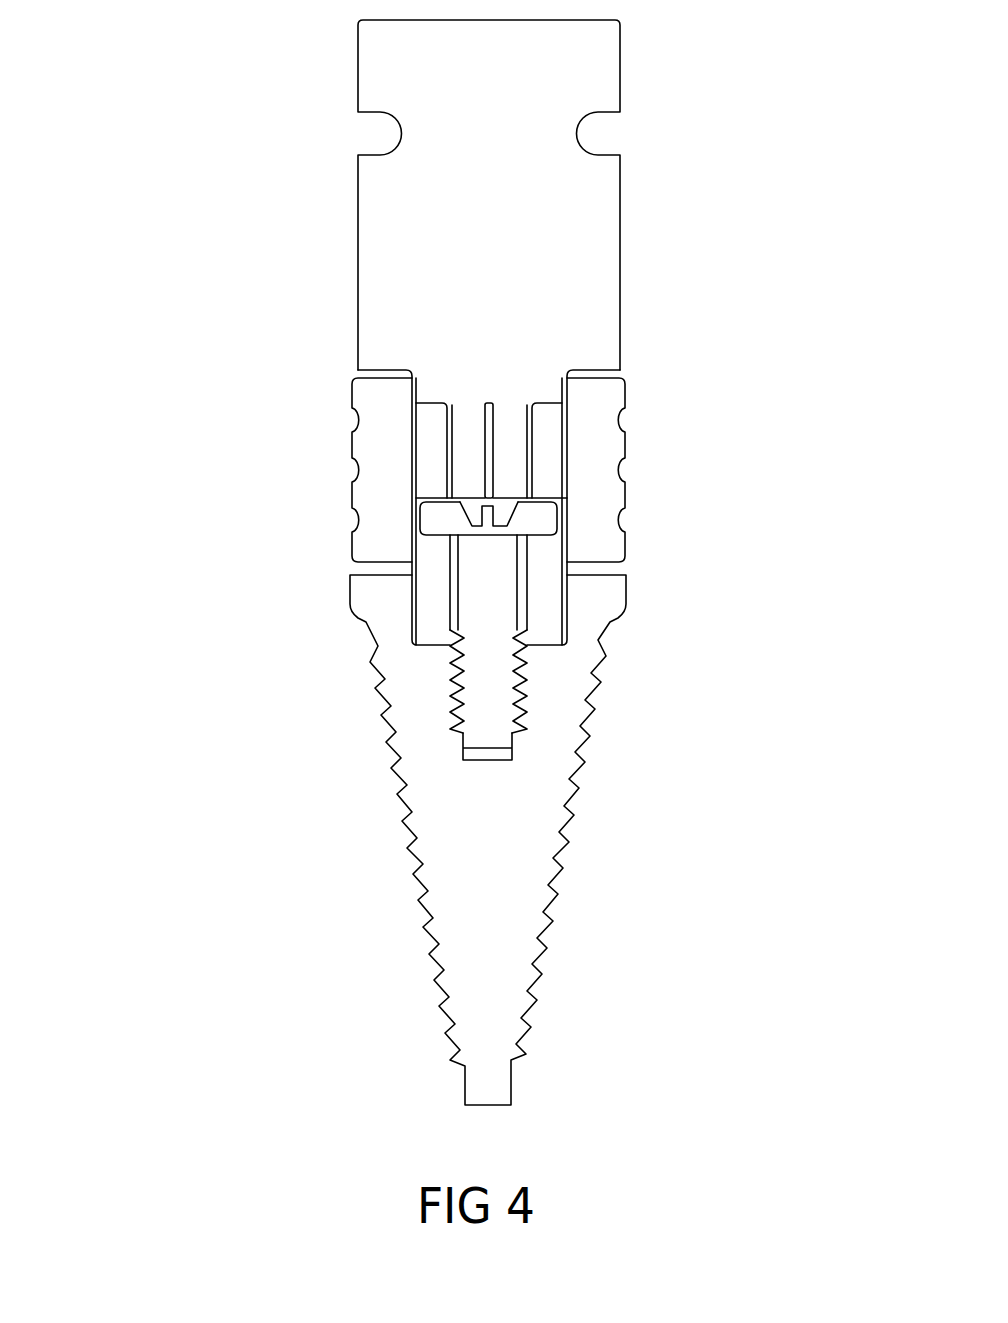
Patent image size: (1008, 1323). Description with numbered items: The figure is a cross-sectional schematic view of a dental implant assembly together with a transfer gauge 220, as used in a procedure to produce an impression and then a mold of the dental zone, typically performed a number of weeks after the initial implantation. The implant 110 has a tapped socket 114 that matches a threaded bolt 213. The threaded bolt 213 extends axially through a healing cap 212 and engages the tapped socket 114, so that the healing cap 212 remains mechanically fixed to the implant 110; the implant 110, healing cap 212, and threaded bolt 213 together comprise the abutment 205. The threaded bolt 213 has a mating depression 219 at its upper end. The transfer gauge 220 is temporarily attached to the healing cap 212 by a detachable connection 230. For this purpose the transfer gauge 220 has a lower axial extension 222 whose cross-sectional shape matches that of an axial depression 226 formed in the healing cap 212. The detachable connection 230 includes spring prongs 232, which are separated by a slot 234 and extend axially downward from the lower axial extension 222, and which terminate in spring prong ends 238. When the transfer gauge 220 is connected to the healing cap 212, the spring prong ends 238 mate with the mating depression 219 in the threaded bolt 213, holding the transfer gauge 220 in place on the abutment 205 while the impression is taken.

The implant 110 is at (553, 840).
The tapped socket 114 is at (518, 677).
The abutment 205 is at (461, 339).
The healing cap 212 is at (627, 497).
The threaded bolt 213 is at (460, 603).
The mating depression 219 is at (472, 527).
The transfer gauge 220 is at (622, 213).
The lower axial extension 222 is at (412, 392).
The axial depression 226 is at (563, 433).
The detachable connection 230 is at (522, 364).
The spring prongs 232 is at (447, 480).
The slot 234 is at (487, 447).
The spring prong ends 238 is at (515, 513).